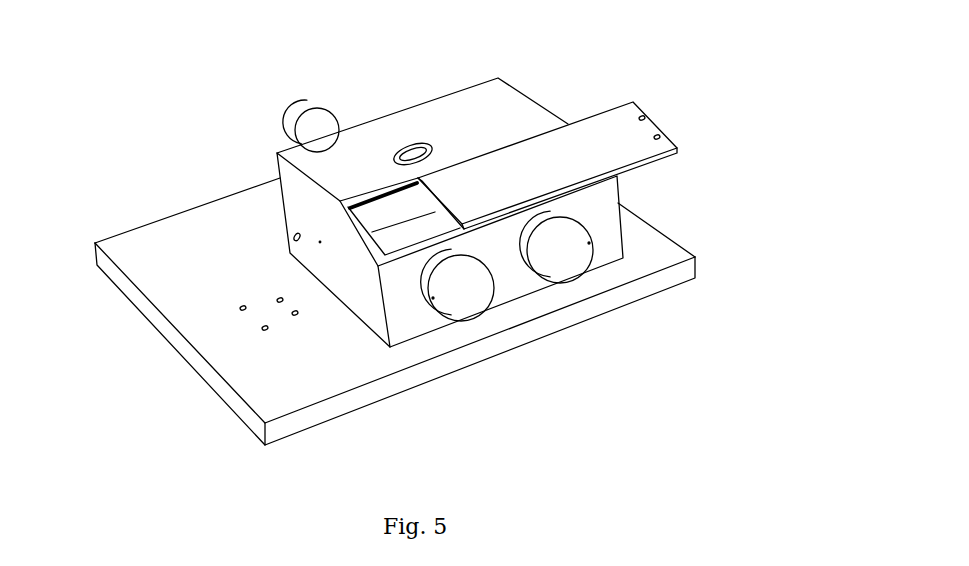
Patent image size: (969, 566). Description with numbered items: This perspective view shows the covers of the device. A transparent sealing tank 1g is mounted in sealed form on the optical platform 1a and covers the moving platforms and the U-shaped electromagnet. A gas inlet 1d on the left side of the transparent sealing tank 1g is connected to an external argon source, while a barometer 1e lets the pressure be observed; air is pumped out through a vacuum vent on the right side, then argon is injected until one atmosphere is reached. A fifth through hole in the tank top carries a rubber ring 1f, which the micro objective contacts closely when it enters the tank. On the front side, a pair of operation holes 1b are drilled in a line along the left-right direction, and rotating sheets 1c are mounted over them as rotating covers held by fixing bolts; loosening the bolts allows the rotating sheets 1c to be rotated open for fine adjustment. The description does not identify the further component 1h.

The optical platform 1a is at (637, 267).
The operation holes 1b is at (548, 225).
The rotating sheets 1c is at (460, 308).
The gas inlet 1d is at (292, 237).
The barometer 1e is at (310, 125).
The rubber ring 1f is at (410, 143).
The transparent sealing tank 1g is at (520, 117).
The slide plate 1h is at (637, 148).